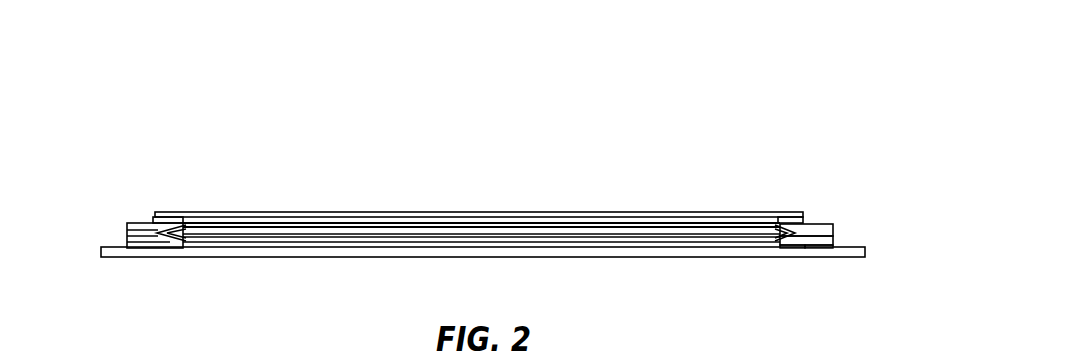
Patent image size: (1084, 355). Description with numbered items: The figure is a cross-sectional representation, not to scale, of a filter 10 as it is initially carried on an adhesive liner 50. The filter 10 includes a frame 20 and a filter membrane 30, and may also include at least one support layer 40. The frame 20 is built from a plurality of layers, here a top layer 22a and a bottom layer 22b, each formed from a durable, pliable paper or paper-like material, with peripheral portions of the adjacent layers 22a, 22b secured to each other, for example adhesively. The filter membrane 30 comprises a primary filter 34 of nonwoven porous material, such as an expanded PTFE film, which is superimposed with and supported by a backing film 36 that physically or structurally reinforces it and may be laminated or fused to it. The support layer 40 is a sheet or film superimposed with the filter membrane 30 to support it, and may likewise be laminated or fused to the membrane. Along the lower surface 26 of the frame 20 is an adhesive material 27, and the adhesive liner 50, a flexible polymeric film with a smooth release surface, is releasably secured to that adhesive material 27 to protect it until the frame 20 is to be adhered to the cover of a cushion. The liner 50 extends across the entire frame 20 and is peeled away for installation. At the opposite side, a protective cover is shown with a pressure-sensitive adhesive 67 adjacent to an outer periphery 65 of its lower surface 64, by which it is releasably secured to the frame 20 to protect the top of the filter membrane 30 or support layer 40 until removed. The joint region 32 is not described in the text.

The filter 10 is at (136, 108).
The frame 20 is at (870, 201).
The top layer 22a is at (826, 225).
The bottom layer 22b is at (828, 239).
The lower surface 26 is at (792, 248).
The adhesive material 27 is at (808, 250).
The filter membrane 30 is at (481, 172).
The right interlocking joint 32 is at (777, 228).
The primary filter 34 is at (278, 234).
The backing film 36 is at (318, 242).
The support layer 40 is at (487, 228).
The adhesive liner 50 is at (852, 257).
The lower surface 64 is at (170, 237).
The outer periphery 65 is at (153, 212).
The pressure-sensitive adhesive 67 is at (153, 220).